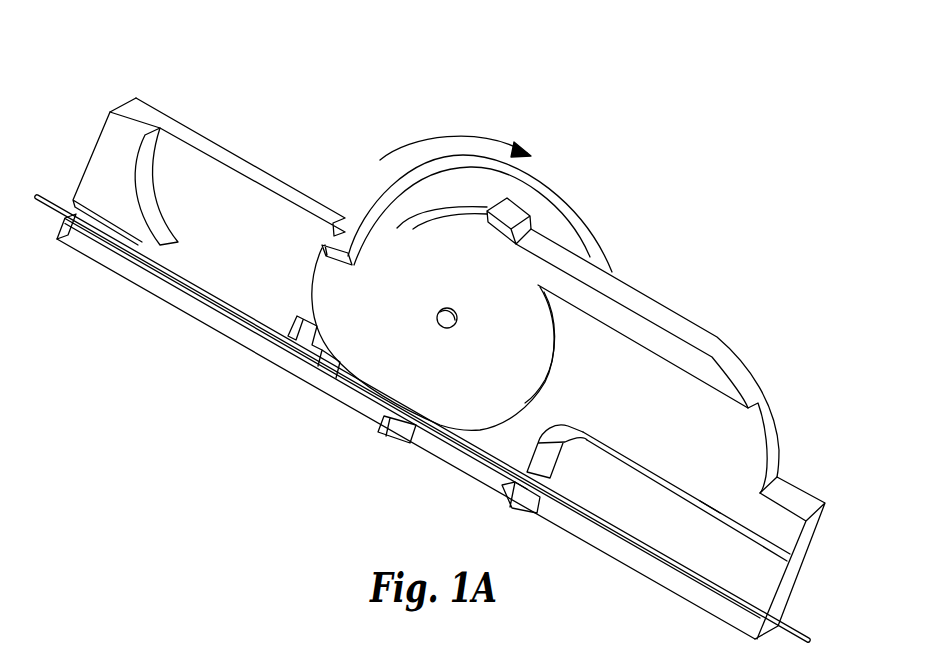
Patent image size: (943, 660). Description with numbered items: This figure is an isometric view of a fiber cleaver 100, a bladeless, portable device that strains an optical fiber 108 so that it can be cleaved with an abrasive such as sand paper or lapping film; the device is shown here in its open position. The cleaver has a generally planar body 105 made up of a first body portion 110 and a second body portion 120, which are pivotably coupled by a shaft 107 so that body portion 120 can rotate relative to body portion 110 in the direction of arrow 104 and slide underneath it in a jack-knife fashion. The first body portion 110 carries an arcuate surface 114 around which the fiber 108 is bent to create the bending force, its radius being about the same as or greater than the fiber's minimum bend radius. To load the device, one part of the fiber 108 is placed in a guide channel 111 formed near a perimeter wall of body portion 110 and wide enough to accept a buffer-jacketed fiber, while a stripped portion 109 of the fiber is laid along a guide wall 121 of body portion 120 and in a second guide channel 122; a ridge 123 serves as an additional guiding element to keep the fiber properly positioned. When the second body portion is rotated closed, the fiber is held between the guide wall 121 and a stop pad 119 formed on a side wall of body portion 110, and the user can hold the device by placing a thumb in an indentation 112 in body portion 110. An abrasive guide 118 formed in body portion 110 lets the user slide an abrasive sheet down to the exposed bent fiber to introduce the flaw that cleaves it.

The fiber cleaver 100 is at (264, 116).
The arrow 104 is at (488, 133).
The body 105 is at (639, 285).
The shaft 107 is at (440, 322).
The optical fiber 108 is at (756, 606).
The stripped portion 109 is at (50, 196).
The first body portion 110 is at (618, 553).
The guide channel 111 is at (503, 499).
The indentation 112 is at (717, 547).
The arcuate surface 114 is at (313, 270).
The abrasive guide 118 is at (338, 243).
The stop pad 119 is at (518, 217).
The second body portion 120 is at (143, 281).
The guide wall 121 is at (390, 410).
The second guide channel 122 is at (102, 227).
The ridge 123 is at (290, 360).